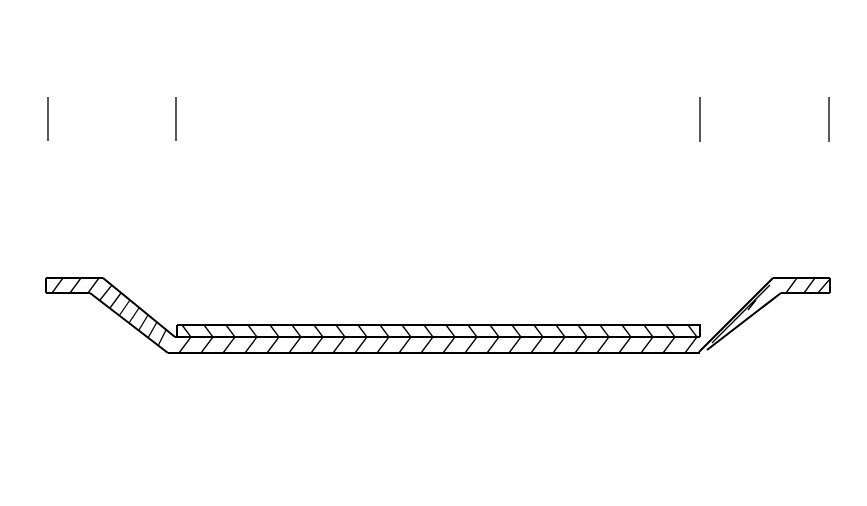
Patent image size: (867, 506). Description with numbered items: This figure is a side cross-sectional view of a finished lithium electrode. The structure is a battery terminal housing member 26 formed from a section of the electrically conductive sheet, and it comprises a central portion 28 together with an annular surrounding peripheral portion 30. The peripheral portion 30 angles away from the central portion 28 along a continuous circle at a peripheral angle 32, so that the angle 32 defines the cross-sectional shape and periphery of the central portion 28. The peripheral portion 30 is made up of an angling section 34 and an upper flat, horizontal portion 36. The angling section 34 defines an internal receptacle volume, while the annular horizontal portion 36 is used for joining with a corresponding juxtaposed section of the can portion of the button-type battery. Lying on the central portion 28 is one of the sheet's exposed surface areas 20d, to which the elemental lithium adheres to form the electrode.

The battery terminal housing member 26 is at (631, 74).
The central portion 28 is at (340, 345).
The peripheral portion 30 is at (829, 112).
The peripheral angle 32 is at (168, 362).
The angling section 34 is at (138, 313).
The upper flat horizontal portion 36 is at (62, 283).
The area 20d is at (363, 330).